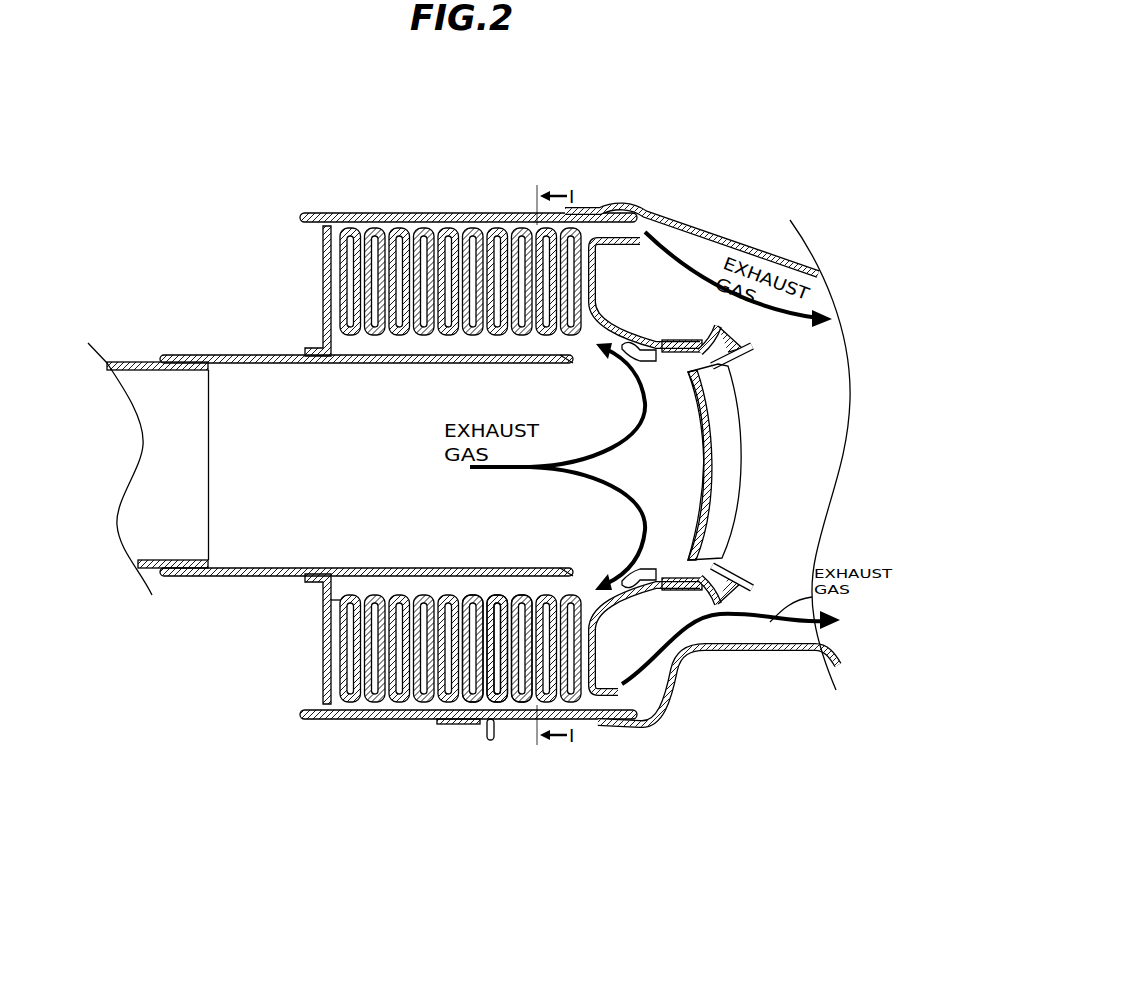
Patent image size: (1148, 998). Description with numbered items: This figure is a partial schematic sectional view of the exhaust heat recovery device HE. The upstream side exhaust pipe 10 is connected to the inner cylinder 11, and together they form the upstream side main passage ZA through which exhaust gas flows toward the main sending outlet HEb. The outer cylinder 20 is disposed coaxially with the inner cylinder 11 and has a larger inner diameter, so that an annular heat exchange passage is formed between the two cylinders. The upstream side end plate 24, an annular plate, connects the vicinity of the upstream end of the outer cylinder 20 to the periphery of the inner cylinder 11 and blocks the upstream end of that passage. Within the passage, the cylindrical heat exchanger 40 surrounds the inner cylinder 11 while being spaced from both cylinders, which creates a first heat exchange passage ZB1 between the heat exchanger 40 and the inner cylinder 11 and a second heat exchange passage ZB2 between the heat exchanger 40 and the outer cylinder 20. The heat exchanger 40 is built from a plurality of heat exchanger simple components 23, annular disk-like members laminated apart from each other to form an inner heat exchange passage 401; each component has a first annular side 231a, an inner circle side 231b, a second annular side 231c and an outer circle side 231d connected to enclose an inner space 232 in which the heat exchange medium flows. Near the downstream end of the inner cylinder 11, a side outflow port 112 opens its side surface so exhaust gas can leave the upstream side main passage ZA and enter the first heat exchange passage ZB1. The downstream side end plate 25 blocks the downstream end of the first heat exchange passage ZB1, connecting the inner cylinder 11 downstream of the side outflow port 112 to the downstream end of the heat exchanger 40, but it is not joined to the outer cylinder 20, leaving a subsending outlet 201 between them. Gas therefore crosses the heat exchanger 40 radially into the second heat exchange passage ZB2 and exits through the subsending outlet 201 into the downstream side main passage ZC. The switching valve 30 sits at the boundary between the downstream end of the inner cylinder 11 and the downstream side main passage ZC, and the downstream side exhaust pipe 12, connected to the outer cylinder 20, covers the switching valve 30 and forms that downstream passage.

The upstream side exhaust pipe 10 is at (130, 362).
The inner cylinder 11 is at (246, 364).
The side outflow port 112 is at (592, 366).
The downstream side exhaust pipe 12 is at (738, 234).
The outer cylinder 20 is at (428, 213).
The subsending outlet 201 is at (642, 212).
The heat exchanger simple component 23 is at (475, 232).
The first annular side 231a is at (521, 597).
The inner circle side 231b is at (499, 597).
The second annular side 231c is at (490, 597).
The outer circle side 231d is at (492, 741).
The inner space 232 is at (508, 598).
The upstream side end plate 24 is at (300, 228).
The downstream side end plate 25 is at (598, 272).
The switching valve 30 is at (716, 570).
The heat exchanger 40 is at (466, 336).
The inner heat exchange passage 401 is at (386, 600).
The exhaust heat recovery device HE is at (547, 125).
The main sending outlet HEb is at (698, 463).
The upstream side main passage ZA is at (387, 432).
The first heat exchange passage ZB1 is at (340, 347).
The second heat exchange passage ZB2 is at (362, 228).
The downstream side main passage ZC is at (787, 444).